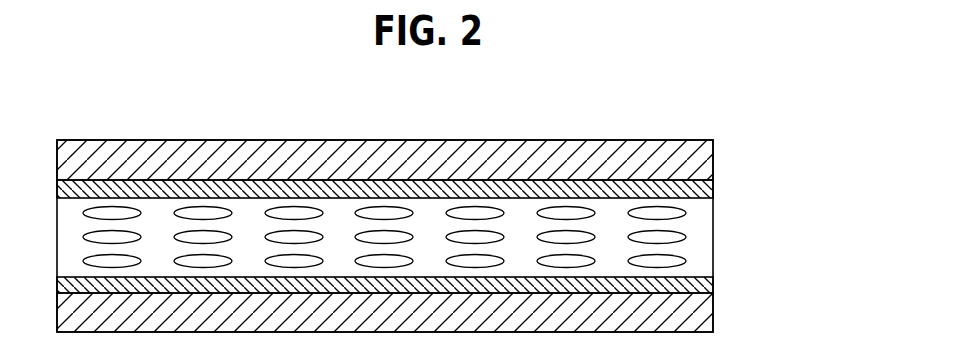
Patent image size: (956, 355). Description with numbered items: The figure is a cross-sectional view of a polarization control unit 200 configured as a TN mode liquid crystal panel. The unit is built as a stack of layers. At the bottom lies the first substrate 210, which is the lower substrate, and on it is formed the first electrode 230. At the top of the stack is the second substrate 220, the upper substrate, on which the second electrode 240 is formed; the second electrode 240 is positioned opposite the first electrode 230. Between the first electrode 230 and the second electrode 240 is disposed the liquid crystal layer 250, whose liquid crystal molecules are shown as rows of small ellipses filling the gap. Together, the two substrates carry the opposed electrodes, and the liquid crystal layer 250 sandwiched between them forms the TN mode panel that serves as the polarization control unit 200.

The polarization control unit 200 is at (127, 108).
The first substrate 210 is at (708, 313).
The second substrate 220 is at (707, 158).
The first electrode 230 is at (710, 283).
The second electrode 240 is at (710, 190).
The liquid crystal layer 250 is at (727, 198).